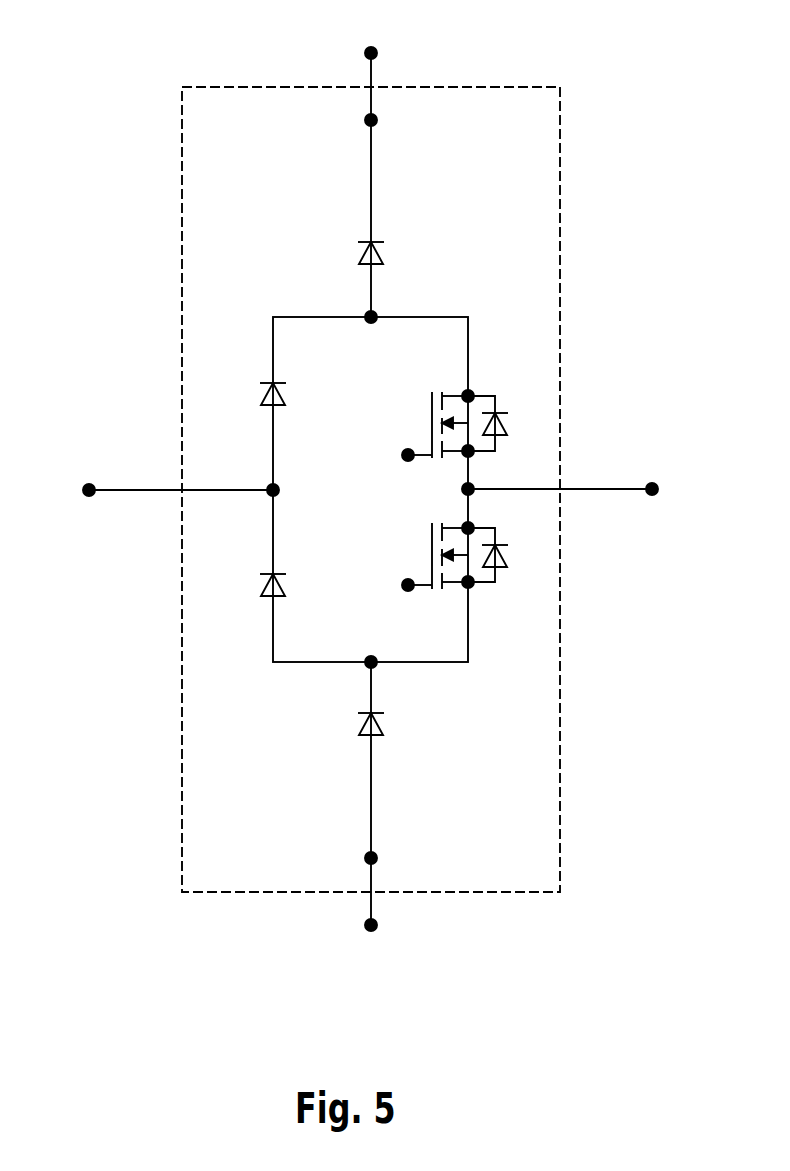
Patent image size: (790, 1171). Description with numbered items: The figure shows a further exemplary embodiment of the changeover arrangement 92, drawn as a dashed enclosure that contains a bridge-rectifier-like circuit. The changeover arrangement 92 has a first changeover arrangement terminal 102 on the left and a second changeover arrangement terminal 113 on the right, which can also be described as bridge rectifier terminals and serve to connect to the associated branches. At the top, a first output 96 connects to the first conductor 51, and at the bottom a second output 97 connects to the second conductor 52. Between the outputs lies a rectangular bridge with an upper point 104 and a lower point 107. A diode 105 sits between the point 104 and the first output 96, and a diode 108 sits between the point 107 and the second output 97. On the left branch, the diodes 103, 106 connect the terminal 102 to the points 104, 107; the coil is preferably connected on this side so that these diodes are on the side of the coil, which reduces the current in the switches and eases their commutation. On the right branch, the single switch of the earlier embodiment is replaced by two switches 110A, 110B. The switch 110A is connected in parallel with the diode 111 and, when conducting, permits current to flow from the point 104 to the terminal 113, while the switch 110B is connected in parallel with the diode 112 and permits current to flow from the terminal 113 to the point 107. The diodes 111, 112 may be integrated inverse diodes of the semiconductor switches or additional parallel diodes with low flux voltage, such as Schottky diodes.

The first conductor 51 is at (377, 52).
The second conductor 52 is at (377, 928).
The changeover arrangement 92 is at (561, 103).
The first output 96 is at (377, 122).
The second output 97 is at (377, 856).
The first changeover arrangement terminal 102 is at (88, 484).
The second changeover arrangement terminal 113 is at (656, 484).
The diode 103 is at (266, 398).
The point 104 is at (376, 313).
The diode 105 is at (360, 259).
The diode 106 is at (266, 591).
The point 107 is at (367, 666).
The diode 108 is at (383, 729).
The switch 110A is at (428, 424).
The switch 110B is at (428, 553).
The diode 111 is at (505, 428).
The diode 112 is at (505, 557).